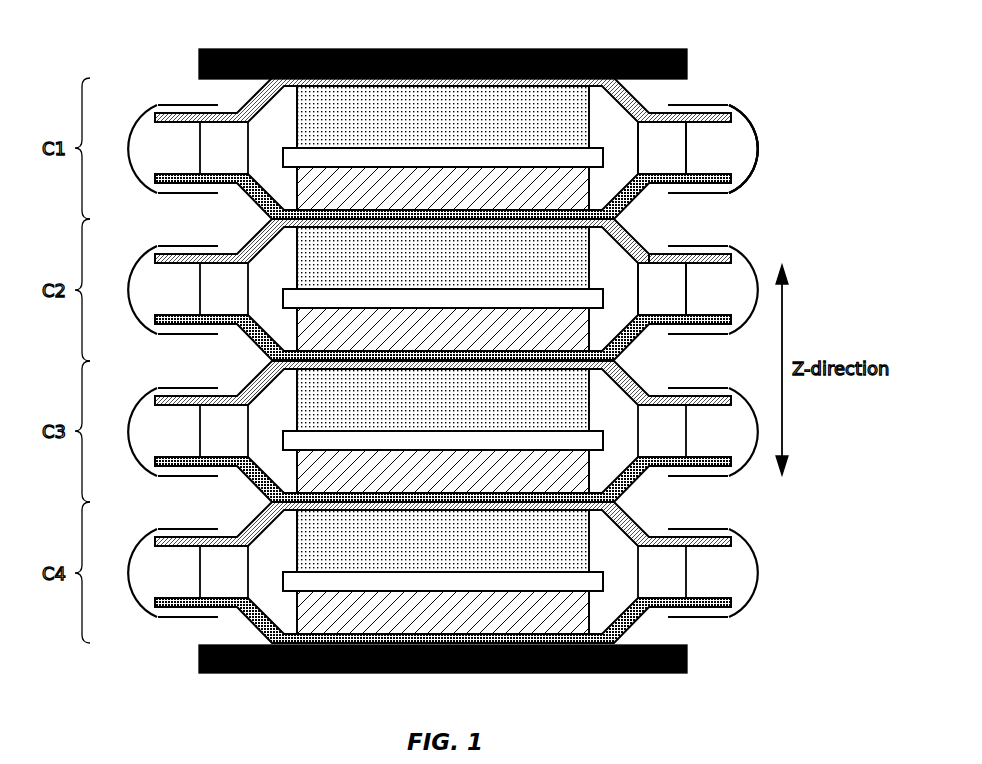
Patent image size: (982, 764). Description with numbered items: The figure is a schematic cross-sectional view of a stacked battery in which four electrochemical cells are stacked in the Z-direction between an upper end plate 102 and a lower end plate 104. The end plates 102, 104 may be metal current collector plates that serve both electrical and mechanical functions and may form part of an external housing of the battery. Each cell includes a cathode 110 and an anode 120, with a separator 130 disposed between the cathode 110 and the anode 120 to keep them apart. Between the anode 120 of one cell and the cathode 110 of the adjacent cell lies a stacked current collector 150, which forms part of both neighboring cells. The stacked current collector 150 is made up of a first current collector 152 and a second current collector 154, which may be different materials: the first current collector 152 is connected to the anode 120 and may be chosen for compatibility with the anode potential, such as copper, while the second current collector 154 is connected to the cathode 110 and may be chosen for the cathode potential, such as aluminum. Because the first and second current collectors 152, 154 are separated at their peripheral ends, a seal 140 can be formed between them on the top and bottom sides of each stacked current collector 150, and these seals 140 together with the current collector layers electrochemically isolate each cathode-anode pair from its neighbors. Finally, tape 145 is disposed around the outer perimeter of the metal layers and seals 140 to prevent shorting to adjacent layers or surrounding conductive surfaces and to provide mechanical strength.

The end plate 102 is at (565, 49).
The end plate 104 is at (313, 673).
The cathode 110 is at (297, 108).
The anode 120 is at (297, 174).
The separator 130 is at (283, 580).
The seal 140 is at (687, 156).
The tape 145 is at (720, 103).
The stacked current collector 150 is at (814, 120).
The first current collector 152 is at (760, 149).
The second current collector 154 is at (736, 257).